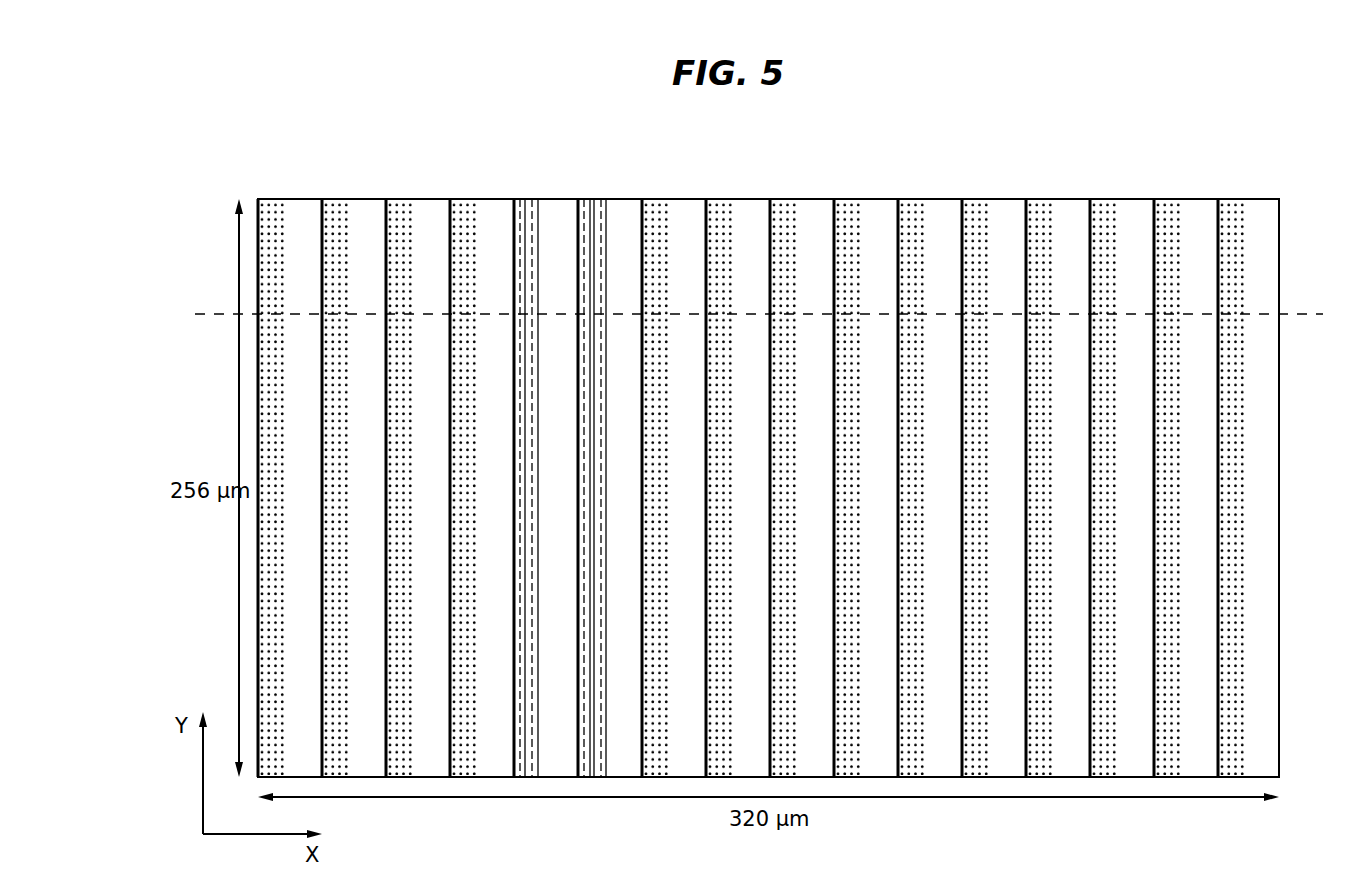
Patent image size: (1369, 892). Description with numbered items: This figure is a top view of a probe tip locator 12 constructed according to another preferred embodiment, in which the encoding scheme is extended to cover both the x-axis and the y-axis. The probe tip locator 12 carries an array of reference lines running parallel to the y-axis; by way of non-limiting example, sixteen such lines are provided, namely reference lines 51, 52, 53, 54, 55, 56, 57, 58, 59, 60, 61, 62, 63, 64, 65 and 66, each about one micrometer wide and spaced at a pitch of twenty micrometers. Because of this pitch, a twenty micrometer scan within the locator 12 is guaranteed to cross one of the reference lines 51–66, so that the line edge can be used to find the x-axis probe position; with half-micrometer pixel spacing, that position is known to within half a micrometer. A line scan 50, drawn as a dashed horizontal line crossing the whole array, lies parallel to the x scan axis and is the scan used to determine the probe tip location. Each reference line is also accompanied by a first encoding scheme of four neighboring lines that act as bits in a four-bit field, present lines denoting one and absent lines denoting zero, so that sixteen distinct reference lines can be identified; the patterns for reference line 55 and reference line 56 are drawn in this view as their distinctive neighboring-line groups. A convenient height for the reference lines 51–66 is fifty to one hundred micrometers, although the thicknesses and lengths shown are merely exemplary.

The probe tip locator 12 is at (162, 211).
The line scan 50 is at (1308, 314).
The reference line 51 is at (258, 199).
The reference line 52 is at (322, 199).
The reference line 53 is at (386, 199).
The reference line 54 is at (450, 199).
The reference line 55 is at (514, 199).
The reference line 56 is at (578, 199).
The reference line 57 is at (642, 199).
The reference line 58 is at (706, 199).
The reference line 59 is at (770, 199).
The reference line 60 is at (834, 199).
The reference line 61 is at (898, 199).
The reference line 62 is at (962, 199).
The reference line 63 is at (1026, 199).
The reference line 64 is at (1090, 199).
The reference line 65 is at (1154, 199).
The reference line 66 is at (1218, 199).